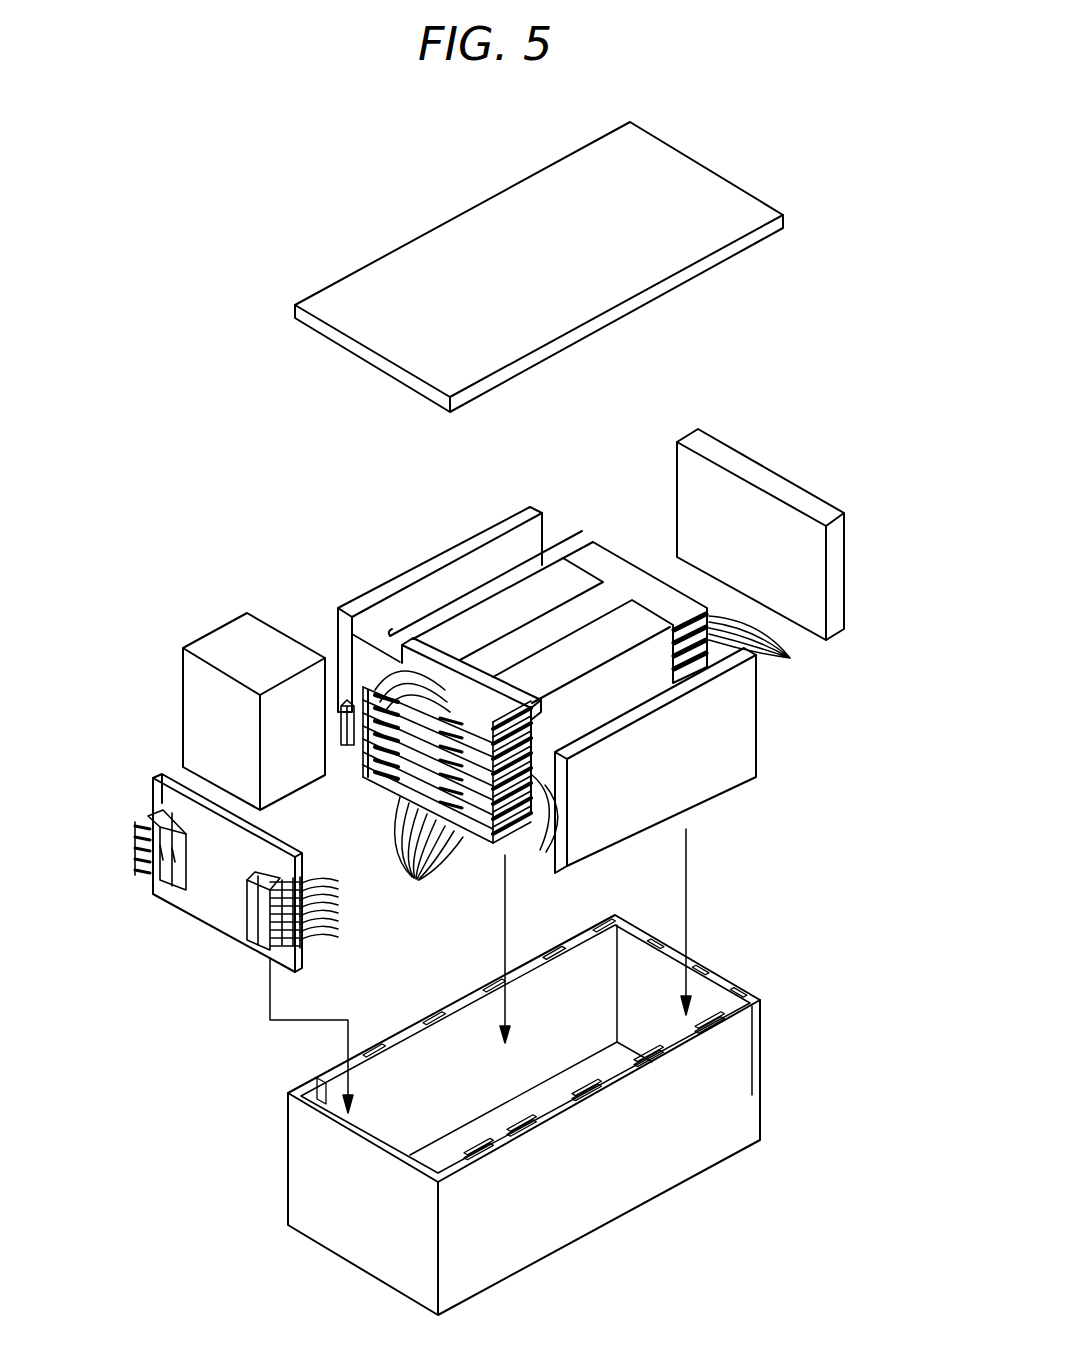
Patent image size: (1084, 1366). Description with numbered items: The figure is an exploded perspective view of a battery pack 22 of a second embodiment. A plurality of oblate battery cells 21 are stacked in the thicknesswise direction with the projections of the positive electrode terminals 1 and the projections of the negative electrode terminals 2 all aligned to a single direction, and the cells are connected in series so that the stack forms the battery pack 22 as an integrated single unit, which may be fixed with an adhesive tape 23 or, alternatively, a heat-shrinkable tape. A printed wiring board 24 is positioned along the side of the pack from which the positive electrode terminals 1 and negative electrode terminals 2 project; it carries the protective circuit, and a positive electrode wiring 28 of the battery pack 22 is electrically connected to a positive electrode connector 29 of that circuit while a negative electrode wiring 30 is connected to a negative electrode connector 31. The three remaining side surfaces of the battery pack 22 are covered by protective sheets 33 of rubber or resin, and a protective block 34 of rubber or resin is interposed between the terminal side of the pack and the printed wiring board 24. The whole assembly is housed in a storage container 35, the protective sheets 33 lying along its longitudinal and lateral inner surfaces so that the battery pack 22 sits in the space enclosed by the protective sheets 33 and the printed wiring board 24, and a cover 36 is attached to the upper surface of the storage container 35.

The positive electrode terminal 1 is at (425, 755).
The negative electrode terminal 2 is at (353, 655).
The battery cell 21 is at (679, 749).
The battery pack 22 is at (496, 574).
The adhesive tape 23 is at (625, 630).
The printed wiring board 24 is at (203, 908).
The positive electrode wiring 28 is at (345, 938).
The positive electrode connector 29 is at (248, 947).
The negative electrode wiring 30 is at (337, 748).
The negative electrode connector 31 is at (130, 808).
The protective sheet 33 is at (402, 580).
The protective block 34 is at (222, 637).
The storage container 35 is at (760, 1087).
The cover 36 is at (723, 197).